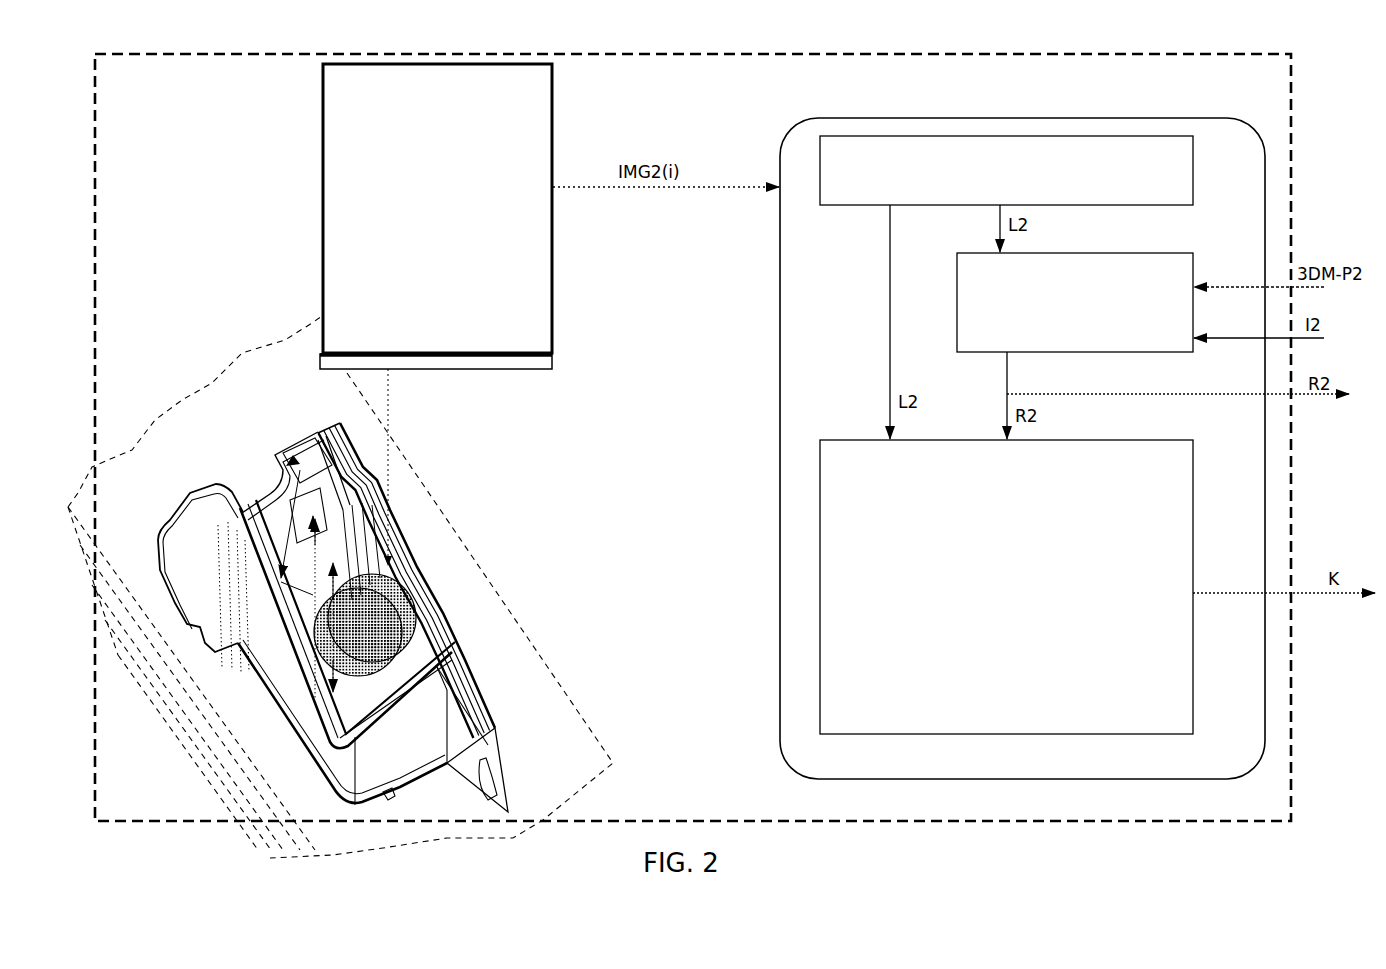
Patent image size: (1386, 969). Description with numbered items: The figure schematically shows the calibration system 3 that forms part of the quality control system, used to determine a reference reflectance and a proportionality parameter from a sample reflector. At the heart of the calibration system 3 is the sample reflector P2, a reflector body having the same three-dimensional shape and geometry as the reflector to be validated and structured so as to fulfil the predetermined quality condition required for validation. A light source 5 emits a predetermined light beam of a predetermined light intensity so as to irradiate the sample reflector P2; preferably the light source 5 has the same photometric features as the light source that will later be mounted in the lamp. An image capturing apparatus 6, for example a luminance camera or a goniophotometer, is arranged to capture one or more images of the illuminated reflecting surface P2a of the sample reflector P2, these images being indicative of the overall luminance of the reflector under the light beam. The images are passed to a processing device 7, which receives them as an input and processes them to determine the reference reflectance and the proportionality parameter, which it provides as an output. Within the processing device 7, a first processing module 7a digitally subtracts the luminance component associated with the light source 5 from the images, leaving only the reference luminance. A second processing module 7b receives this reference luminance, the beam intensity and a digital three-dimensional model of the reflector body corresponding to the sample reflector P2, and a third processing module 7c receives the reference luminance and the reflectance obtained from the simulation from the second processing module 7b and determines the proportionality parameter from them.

The calibration system 3 is at (1293, 165).
The light source 5 is at (408, 580).
The image capturing apparatus 6 is at (436, 315).
The processing device 7 is at (778, 496).
The first processing module 7a is at (1006, 170).
The second processing module 7b is at (1075, 302).
The third processing module 7c is at (1006, 587).
The sample reflector P2 is at (403, 617).
The reflecting surface P2a is at (424, 647).